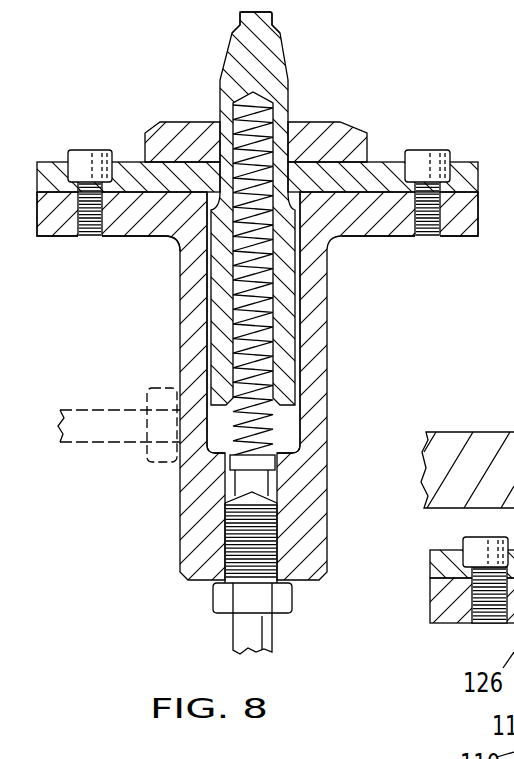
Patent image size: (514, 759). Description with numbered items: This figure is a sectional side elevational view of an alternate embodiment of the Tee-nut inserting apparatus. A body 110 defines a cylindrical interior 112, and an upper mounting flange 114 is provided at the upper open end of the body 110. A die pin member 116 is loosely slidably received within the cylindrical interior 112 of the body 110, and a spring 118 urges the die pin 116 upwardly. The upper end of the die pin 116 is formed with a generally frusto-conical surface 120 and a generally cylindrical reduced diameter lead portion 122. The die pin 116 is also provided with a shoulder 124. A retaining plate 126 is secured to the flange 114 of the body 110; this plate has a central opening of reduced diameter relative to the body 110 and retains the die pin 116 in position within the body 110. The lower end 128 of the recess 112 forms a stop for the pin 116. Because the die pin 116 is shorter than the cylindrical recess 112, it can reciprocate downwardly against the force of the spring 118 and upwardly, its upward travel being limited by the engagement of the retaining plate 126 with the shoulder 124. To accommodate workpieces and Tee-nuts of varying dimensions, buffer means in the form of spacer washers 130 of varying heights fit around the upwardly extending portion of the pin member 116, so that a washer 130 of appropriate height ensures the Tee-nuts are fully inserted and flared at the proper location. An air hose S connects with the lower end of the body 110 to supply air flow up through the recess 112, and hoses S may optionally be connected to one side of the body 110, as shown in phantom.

The body 110 is at (329, 347).
The cylindrical interior 112 is at (288, 420).
The upper mounting flange 114 is at (462, 230).
The die pin member 116 is at (222, 335).
The spring 118 is at (207, 453).
The frusto-conical surface 120 is at (228, 47).
The reduced diameter lead portion 122 is at (273, 18).
The shoulder 124 is at (184, 252).
The retaining plate 126 is at (388, 164).
The lower end 128 is at (226, 495).
The spacer washers 130 is at (334, 133).
The air hose S is at (240, 633).